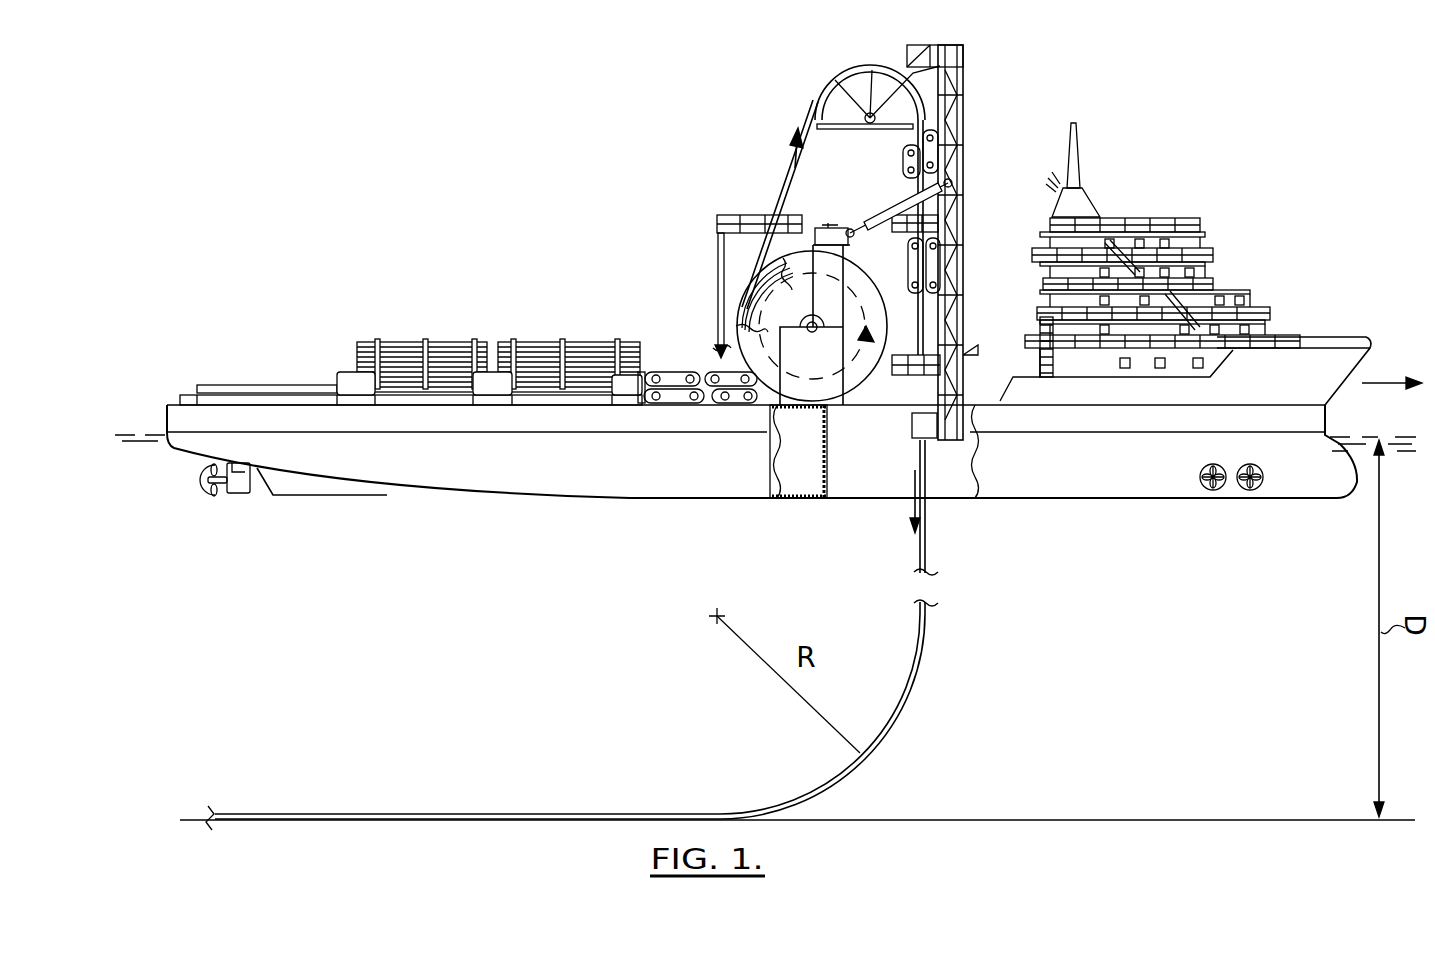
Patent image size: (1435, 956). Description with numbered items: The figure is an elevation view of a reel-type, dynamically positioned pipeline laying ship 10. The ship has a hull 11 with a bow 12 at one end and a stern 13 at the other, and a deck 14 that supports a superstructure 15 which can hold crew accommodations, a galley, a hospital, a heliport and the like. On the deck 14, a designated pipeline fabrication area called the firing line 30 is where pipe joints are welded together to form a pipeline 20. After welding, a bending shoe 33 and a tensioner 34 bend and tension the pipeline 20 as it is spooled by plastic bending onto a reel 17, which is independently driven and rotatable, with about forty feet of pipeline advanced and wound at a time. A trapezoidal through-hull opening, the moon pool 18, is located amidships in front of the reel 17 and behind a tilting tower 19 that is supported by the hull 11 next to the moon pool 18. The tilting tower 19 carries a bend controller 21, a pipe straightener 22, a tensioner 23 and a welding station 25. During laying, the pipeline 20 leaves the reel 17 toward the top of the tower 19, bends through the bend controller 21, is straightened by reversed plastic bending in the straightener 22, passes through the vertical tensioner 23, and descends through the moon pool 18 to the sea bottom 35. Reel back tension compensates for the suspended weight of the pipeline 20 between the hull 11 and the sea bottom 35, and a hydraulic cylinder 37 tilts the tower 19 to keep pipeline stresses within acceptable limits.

The pipeline laying ship 10 is at (1192, 124).
The hull 11 is at (1310, 500).
The bow 12 is at (1372, 345).
The stern 13 is at (183, 455).
The deck 14 is at (440, 258).
The superstructure 15 is at (1200, 233).
The reel 17 is at (800, 265).
The moon pool 18 is at (870, 486).
The tilting tower 19 is at (964, 75).
The pipeline 20 is at (775, 215).
The bend controller 21 is at (835, 88).
The pipe straightener 22 is at (930, 162).
The tensioner 23 is at (935, 270).
The welding station 25 is at (902, 378).
The firing line 30 is at (290, 387).
The bending shoe 33 is at (742, 392).
The tensioner 34 is at (674, 392).
The sea bottom 35 is at (378, 822).
The hydraulic cylinder 37 is at (850, 225).